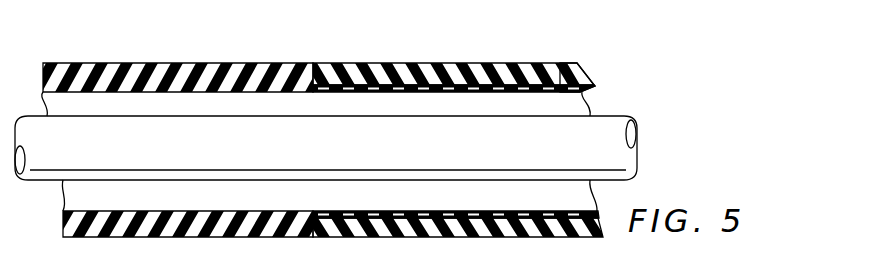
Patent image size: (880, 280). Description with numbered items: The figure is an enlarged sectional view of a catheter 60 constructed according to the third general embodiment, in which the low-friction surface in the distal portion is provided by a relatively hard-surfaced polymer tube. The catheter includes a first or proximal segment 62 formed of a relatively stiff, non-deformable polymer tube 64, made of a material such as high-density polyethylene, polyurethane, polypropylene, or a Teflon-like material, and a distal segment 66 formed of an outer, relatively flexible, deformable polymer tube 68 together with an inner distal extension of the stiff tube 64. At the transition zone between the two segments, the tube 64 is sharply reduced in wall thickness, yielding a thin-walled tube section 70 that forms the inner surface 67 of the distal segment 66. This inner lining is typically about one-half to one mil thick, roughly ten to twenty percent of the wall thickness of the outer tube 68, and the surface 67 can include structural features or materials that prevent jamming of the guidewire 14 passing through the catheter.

The guidewire 14 is at (381, 159).
The catheter 60 is at (330, 63).
The proximal segment 62 is at (96, 64).
The polymer tube 64 is at (198, 240).
The distal segment 66 is at (438, 240).
The inner surface 67 is at (550, 94).
The outer polymer tube 68 is at (560, 63).
The thin-walled tube section 70 is at (452, 212).